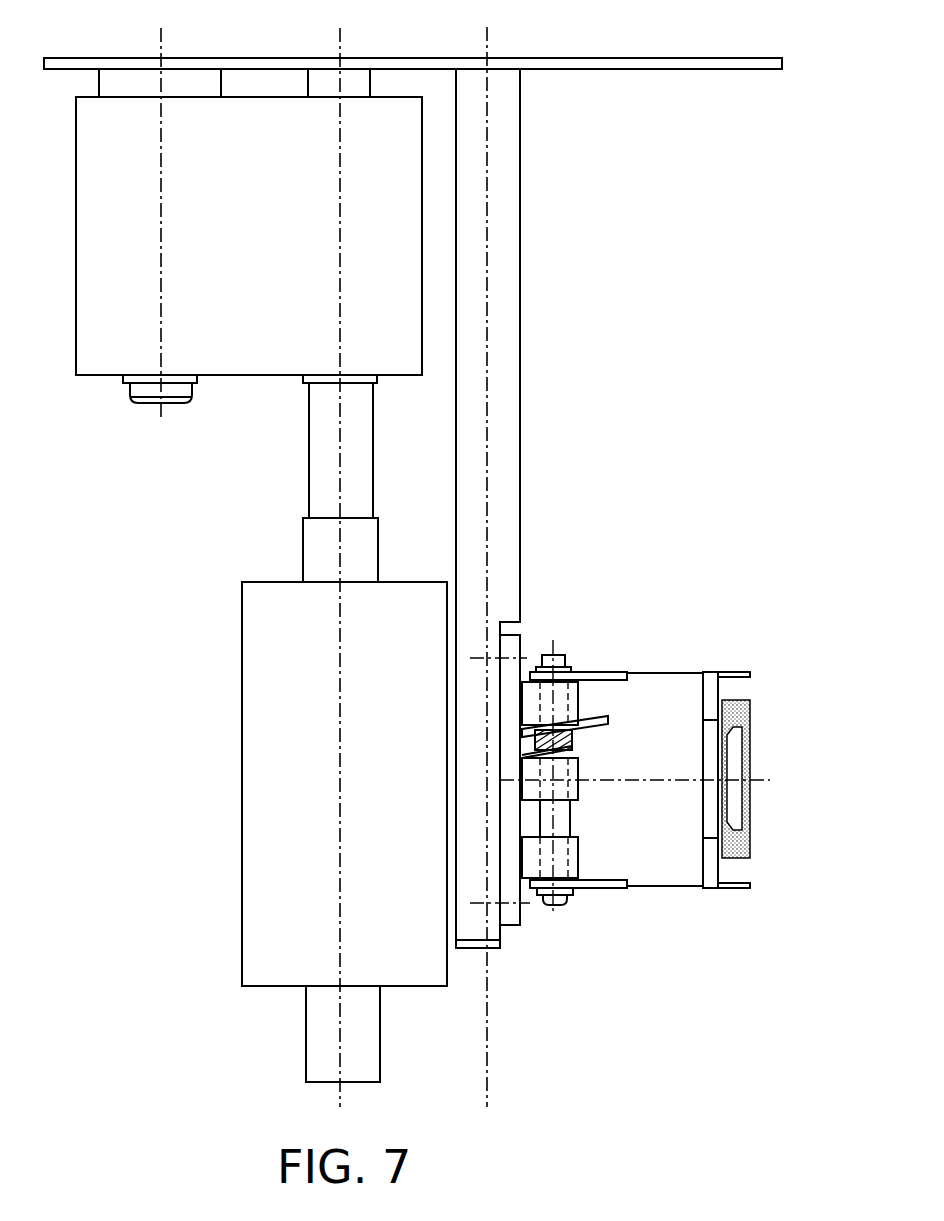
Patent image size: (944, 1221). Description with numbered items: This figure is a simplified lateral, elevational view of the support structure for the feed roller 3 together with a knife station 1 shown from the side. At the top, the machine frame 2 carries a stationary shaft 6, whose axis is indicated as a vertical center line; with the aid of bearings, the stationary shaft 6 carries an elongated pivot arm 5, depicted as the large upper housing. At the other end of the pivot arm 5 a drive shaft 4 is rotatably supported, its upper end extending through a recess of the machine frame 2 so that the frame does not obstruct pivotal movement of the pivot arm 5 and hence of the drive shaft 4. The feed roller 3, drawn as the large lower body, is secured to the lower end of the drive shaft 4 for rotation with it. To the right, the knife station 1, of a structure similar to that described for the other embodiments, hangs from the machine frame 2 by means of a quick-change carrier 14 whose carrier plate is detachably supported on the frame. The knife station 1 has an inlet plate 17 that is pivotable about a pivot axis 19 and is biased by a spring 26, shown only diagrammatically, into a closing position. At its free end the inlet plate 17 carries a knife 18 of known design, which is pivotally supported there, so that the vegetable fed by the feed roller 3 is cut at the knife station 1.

The knife station 1 is at (703, 560).
The machine frame 2 is at (667, 69).
The feed roller 3 is at (270, 910).
The drive shaft 4 is at (316, 467).
The pivot arm 5 is at (190, 239).
The stationary shaft 6 is at (161, 40).
The quick-change carrier 14 is at (503, 339).
The inlet plate 17 is at (658, 873).
The knife 18 is at (760, 858).
The pivot axis 19 is at (555, 918).
The spring 26 is at (583, 718).